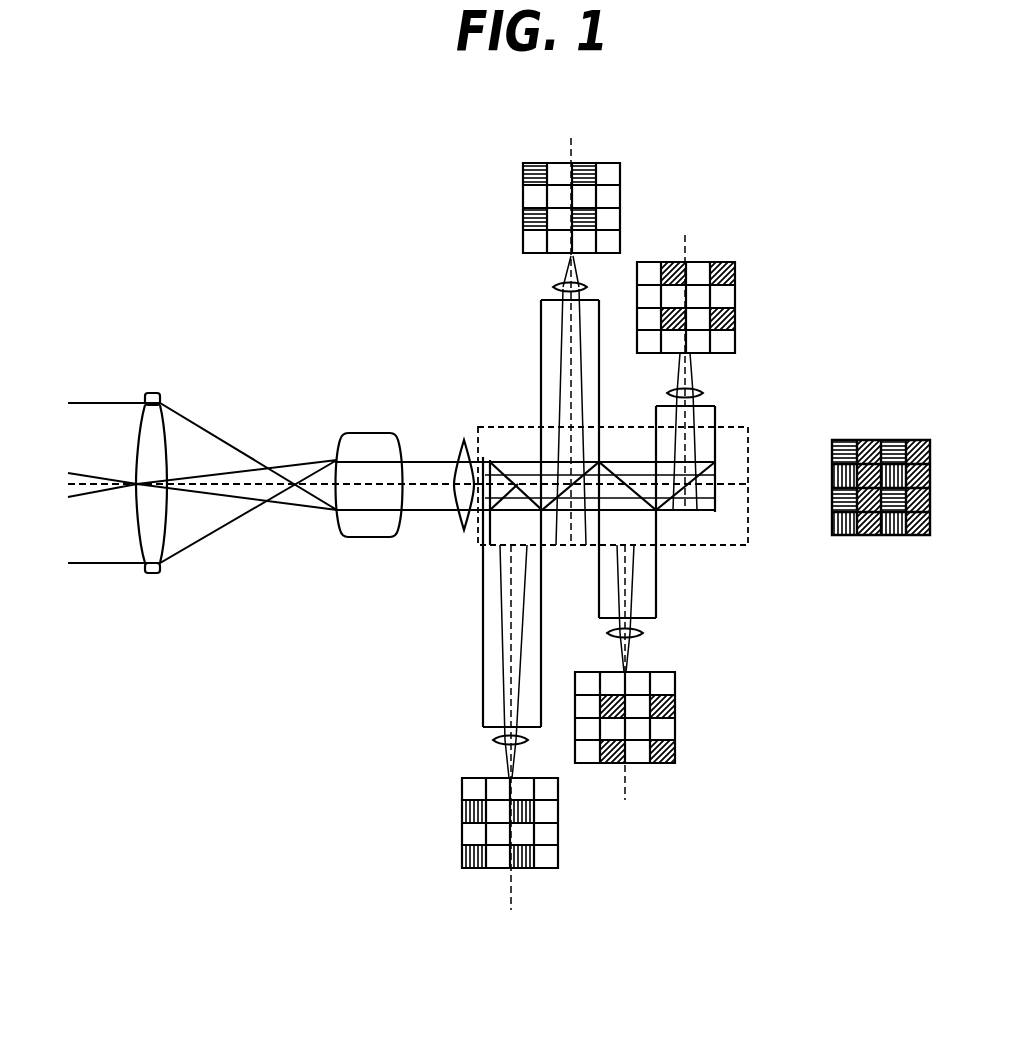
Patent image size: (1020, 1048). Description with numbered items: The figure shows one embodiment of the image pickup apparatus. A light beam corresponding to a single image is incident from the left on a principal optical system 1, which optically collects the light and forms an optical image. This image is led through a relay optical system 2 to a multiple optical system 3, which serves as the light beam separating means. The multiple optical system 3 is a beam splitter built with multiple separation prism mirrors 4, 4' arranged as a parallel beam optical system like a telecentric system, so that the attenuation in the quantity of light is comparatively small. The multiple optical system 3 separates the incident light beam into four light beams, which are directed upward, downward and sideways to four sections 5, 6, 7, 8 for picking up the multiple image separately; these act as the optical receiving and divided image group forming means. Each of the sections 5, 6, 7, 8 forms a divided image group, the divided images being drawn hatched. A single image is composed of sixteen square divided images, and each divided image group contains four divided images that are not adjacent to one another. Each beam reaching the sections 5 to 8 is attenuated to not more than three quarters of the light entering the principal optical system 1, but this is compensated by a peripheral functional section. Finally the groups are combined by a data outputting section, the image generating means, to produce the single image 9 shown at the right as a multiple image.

The principal optical system 1 is at (148, 575).
The relay optical system 2 is at (363, 540).
The multiple optical system 3 is at (748, 441).
The multiple separation prism mirror 4 is at (627, 537).
The multiple separation prism mirror 4' is at (543, 490).
The section for picking up the multiple image 5 is at (462, 808).
The section for picking up the multiple image 6 is at (592, 162).
The section for picking up the multiple image 7 is at (675, 728).
The section for picking up the multiple image 8 is at (703, 262).
The single image 9 is at (890, 440).